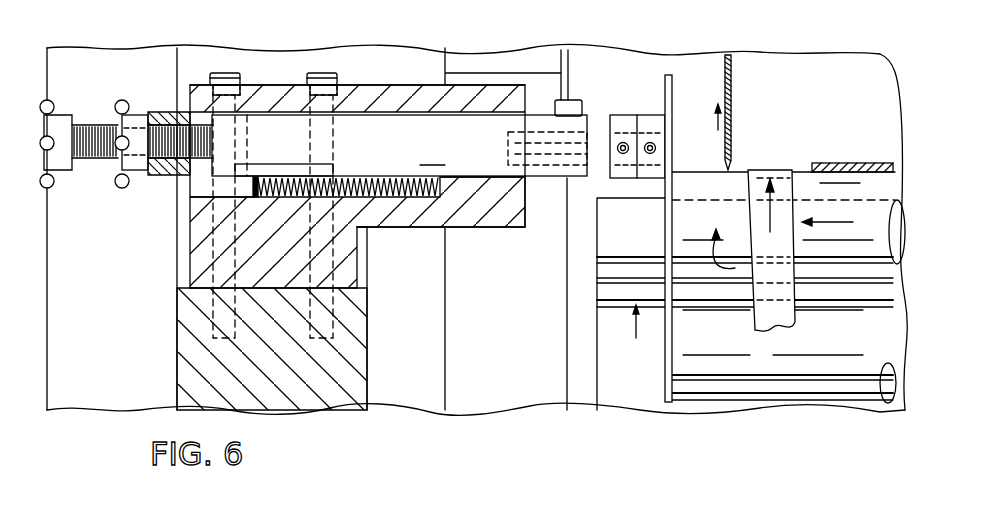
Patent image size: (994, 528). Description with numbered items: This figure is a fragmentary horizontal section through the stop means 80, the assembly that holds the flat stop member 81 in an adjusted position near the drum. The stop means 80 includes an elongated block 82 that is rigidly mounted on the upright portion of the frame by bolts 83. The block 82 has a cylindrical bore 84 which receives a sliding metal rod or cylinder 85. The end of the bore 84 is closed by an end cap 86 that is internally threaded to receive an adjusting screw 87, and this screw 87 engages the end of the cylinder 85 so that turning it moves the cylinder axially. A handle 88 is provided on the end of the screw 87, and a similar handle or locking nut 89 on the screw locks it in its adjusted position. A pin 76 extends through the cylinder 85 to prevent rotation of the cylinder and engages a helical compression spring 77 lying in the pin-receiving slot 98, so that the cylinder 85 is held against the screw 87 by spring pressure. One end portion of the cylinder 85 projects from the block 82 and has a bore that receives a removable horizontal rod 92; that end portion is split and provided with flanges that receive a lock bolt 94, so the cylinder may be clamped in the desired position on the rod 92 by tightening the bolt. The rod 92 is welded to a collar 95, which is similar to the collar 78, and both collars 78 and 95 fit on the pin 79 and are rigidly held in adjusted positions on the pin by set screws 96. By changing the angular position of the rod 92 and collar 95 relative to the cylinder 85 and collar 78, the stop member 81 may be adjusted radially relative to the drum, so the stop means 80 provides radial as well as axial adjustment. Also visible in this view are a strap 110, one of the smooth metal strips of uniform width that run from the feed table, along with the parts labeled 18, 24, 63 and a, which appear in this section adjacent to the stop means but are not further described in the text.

The strip 18 is at (733, 80).
The plate 24 is at (607, 335).
The arm 63 is at (793, 322).
The pin 76 is at (257, 174).
The helical compression spring 77 is at (360, 182).
The collar 78 is at (653, 175).
The pin 79 is at (608, 160).
The stop means 80 is at (617, 92).
The stop member 81 is at (667, 372).
The elongated block 82 is at (200, 253).
The bolts 83 is at (322, 72).
The cylindrical bore 84 is at (380, 121).
The sliding metal rod or cylinder 85 is at (481, 158).
The end cap 86 is at (171, 176).
The adjusting screw 87 is at (88, 127).
The handle 88 is at (45, 126).
The locking nut 89 is at (123, 188).
The removable horizontal rod 92 is at (593, 132).
The lock bolt 94 is at (561, 98).
The collar 95 is at (623, 178).
The set screws 96 is at (655, 143).
The pin-receiving slot 98 is at (198, 192).
The strap 110 is at (860, 163).
The gap a is at (837, 183).